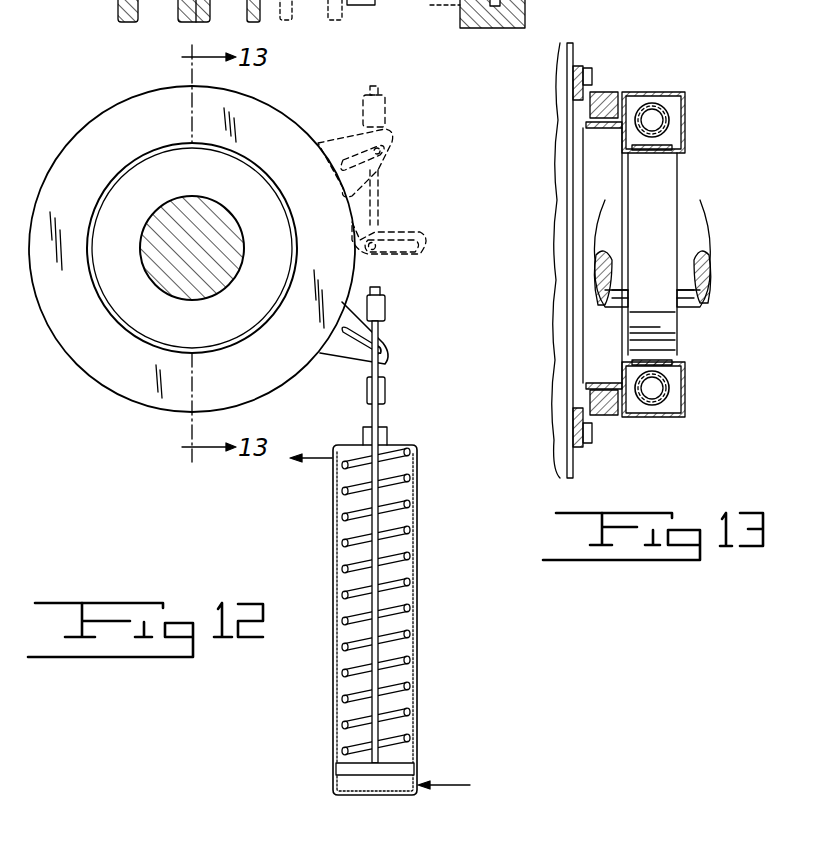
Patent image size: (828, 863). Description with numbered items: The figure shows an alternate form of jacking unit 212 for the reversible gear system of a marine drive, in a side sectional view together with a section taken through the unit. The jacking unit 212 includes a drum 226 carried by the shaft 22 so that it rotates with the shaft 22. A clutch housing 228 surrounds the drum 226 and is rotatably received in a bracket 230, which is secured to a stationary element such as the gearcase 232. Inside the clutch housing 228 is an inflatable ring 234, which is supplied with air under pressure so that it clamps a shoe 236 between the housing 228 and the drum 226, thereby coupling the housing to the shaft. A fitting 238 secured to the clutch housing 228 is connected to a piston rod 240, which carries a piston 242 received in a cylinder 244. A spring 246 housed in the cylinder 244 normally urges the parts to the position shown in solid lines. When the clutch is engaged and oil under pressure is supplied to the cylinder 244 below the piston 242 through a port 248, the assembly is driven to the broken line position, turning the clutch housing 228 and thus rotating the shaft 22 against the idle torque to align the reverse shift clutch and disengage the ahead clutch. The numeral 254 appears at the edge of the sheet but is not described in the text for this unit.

In FIG. 12, the shaft 22 is at (176, 292).
In FIG. 13, the shaft 22 is at (705, 240).
In FIG. 12, the jacking unit 212 is at (406, 166).
In FIG. 13, the drum 226 is at (665, 183).
In FIG. 12, the clutch housing 228 is at (138, 388).
In FIG. 13, the clutch housing 228 is at (690, 100).
In FIG. 13, the bracket 230 is at (606, 92).
In FIG. 13, the gearcase 232 is at (574, 50).
In FIG. 13, the inflatable ring 234 is at (663, 96).
In FIG. 13, the shoe 236 is at (647, 154).
In FIG. 12, the fitting 238 is at (346, 367).
In FIG. 12, the piston rod 240 is at (386, 404).
In FIG. 12, the piston 242 is at (340, 768).
In FIG. 12, the cylinder 244 is at (418, 546).
In FIG. 12, the spring 246 is at (337, 540).
In FIG. 12, the port 248 is at (422, 778).
In FIG. 12, the element 254 is at (405, 3).